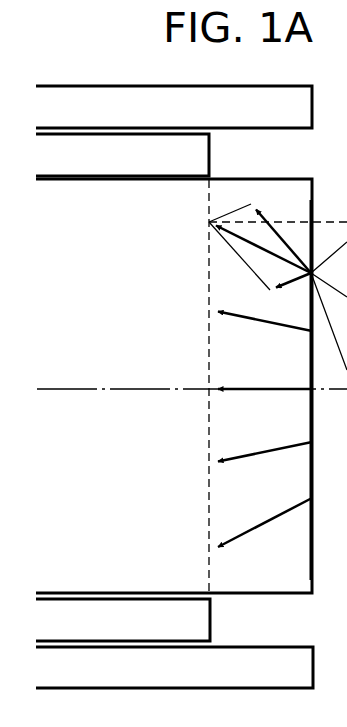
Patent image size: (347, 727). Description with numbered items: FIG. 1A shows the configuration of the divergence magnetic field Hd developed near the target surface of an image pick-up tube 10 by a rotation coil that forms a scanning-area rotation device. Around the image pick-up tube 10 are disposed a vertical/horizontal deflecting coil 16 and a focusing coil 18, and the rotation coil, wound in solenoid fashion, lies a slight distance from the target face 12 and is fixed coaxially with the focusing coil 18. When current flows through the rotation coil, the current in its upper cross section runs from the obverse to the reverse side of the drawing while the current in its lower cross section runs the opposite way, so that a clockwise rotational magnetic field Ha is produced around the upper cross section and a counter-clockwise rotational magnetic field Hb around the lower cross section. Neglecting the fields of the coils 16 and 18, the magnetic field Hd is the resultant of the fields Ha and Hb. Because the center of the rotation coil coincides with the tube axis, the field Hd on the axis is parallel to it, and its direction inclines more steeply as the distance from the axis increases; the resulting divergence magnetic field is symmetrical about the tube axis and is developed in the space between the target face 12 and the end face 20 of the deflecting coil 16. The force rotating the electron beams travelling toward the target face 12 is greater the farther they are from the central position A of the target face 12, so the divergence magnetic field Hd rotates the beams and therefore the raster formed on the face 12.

The focusing coil 18 is at (216, 92).
The vertical/horizontal deflecting coil 16 is at (204, 152).
The image pick-up tube 10 is at (275, 587).
The end face of the coil 16 20 is at (210, 330).
The target face 12 is at (311, 417).
The central position of the target face A is at (311, 387).
The clockwise rotational magnetic field Ha is at (262, 207).
The counter-clockwise rotational magnetic field Hb is at (290, 287).
The divergence magnetic field Hd is at (237, 240).